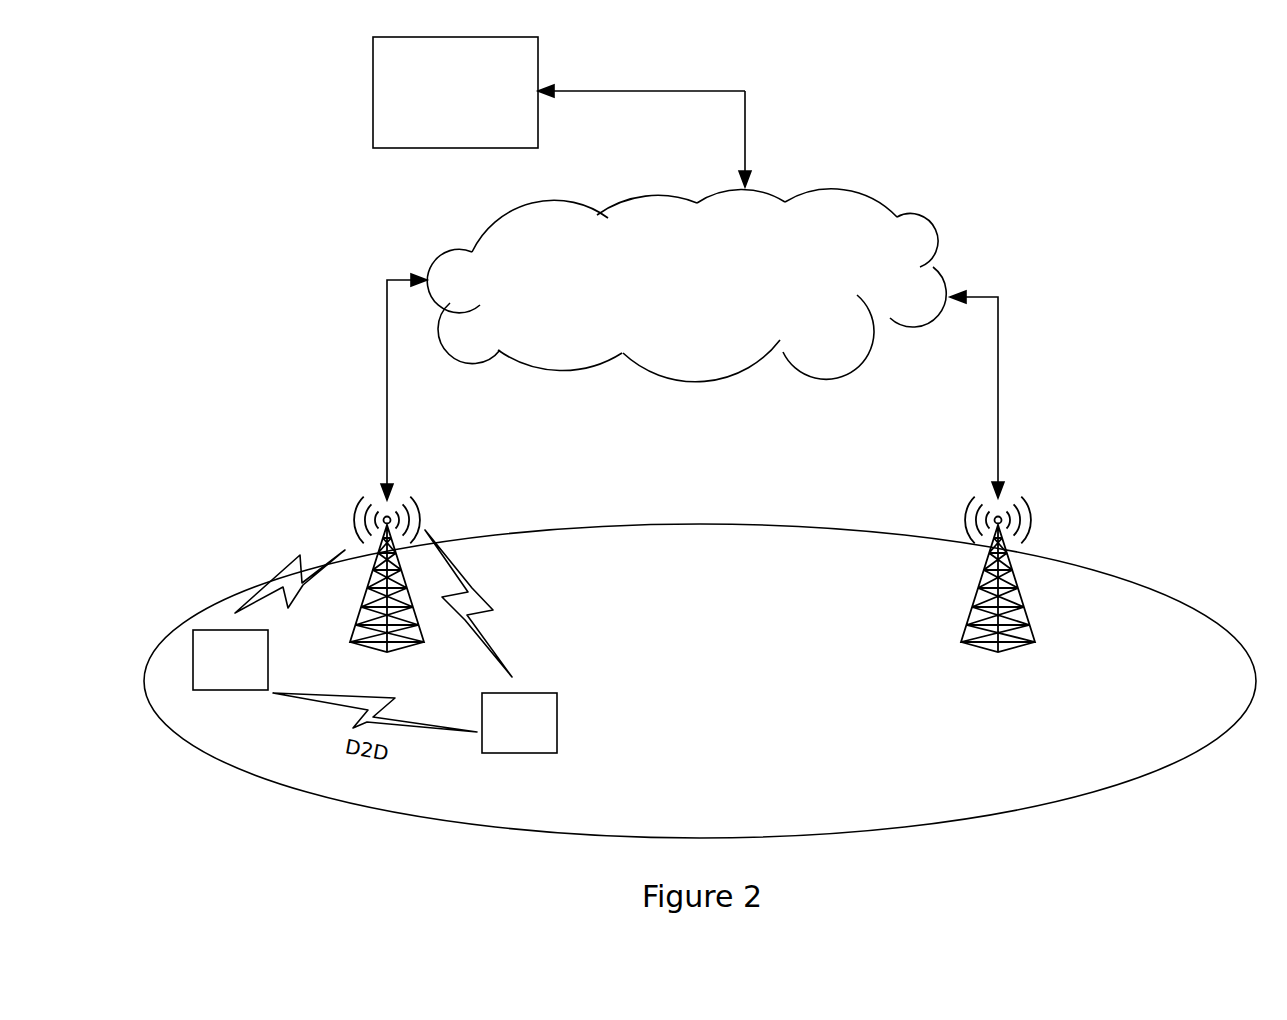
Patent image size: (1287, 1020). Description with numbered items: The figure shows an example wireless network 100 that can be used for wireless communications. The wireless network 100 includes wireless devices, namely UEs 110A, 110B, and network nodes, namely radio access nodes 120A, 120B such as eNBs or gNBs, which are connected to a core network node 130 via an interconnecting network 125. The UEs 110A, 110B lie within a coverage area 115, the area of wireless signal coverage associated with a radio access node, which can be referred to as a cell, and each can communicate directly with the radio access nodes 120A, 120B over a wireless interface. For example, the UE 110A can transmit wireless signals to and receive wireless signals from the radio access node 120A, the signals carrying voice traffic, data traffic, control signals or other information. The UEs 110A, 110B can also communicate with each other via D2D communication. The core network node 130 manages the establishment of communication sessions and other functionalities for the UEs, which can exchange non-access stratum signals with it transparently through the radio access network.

The wireless network 100 is at (1093, 279).
The UE 110A is at (205, 686).
The UE 110B is at (494, 748).
The coverage area 115 is at (681, 826).
The radio access node 120A is at (387, 593).
The radio access node 120B is at (998, 593).
The interconnecting network 125 is at (669, 308).
The core network node 130 is at (503, 118).